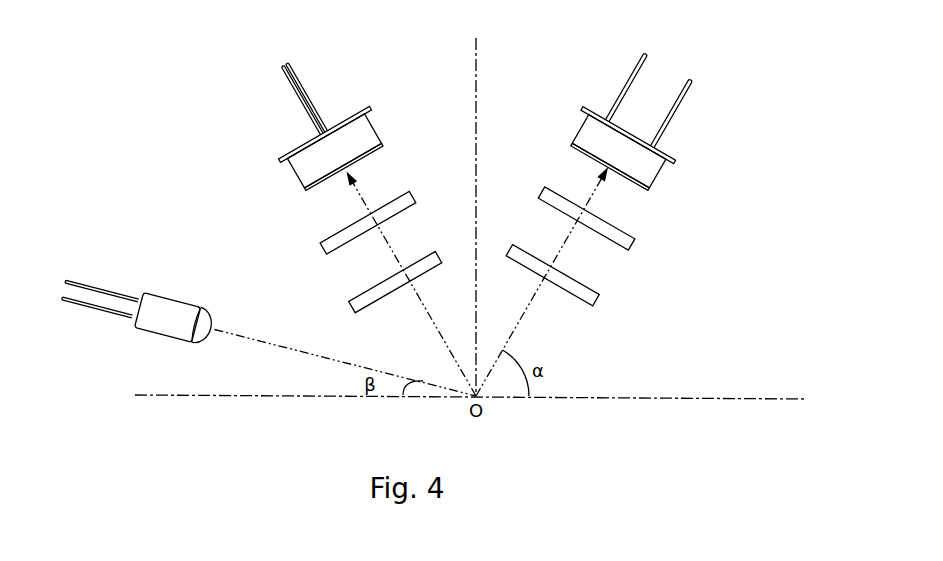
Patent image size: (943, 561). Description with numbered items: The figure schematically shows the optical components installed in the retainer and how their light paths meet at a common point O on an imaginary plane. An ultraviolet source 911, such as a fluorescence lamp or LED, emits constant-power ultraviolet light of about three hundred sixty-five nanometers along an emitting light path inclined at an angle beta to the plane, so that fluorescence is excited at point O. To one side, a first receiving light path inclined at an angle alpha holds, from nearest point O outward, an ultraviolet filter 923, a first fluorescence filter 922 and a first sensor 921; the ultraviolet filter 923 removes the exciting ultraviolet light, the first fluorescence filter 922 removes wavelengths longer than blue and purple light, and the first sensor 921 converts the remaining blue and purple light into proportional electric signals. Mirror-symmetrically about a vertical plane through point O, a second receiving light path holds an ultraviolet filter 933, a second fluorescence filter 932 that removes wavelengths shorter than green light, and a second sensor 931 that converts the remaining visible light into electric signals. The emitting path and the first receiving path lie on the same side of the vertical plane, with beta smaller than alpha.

The ultraviolet source 911 is at (136, 306).
The first sensor 921 is at (314, 116).
The first fluorescence filter 922 is at (349, 223).
The ultraviolet filter 923 is at (377, 282).
The second sensor 931 is at (638, 117).
The second fluorescence filter 932 is at (605, 220).
The ultraviolet filter 933 is at (571, 277).